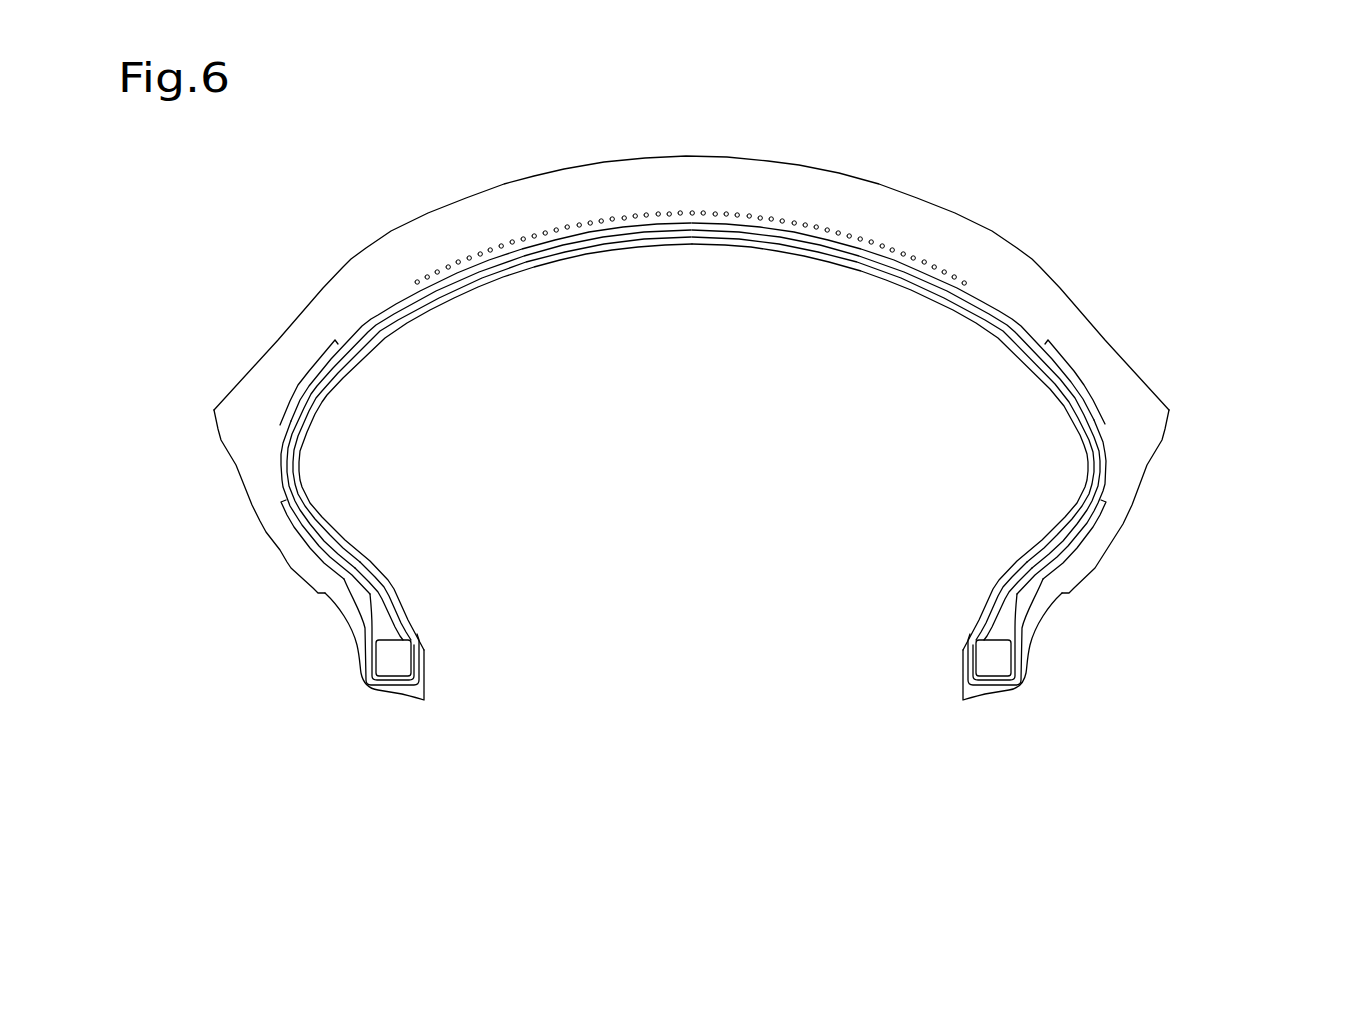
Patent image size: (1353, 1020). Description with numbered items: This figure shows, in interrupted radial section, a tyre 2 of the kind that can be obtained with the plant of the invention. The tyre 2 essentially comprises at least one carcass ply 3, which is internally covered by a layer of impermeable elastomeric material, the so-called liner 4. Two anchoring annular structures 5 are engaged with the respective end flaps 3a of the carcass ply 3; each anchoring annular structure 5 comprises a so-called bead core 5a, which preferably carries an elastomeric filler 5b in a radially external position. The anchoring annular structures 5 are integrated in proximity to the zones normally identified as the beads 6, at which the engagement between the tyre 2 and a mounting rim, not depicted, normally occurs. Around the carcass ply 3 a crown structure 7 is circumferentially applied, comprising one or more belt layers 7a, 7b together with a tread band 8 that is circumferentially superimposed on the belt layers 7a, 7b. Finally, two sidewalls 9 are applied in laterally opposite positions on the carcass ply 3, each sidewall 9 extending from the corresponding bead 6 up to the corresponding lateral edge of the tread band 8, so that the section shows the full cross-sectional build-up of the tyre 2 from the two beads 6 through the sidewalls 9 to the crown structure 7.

The tyre 2 is at (1138, 270).
The carcass ply 3 is at (280, 461).
The end flap of the carcass ply 3a is at (353, 593).
The liner 4 is at (1000, 580).
The anchoring annular structure 5 is at (378, 690).
The bead core 5a is at (985, 660).
The elastomeric filler 5b is at (1003, 623).
The bead 6 is at (427, 653).
The crown structure 7 is at (428, 263).
The belt layer 7a is at (853, 238).
The belt layer 7b is at (983, 300).
The tread band 8 is at (503, 207).
The sidewall 9 is at (270, 520).